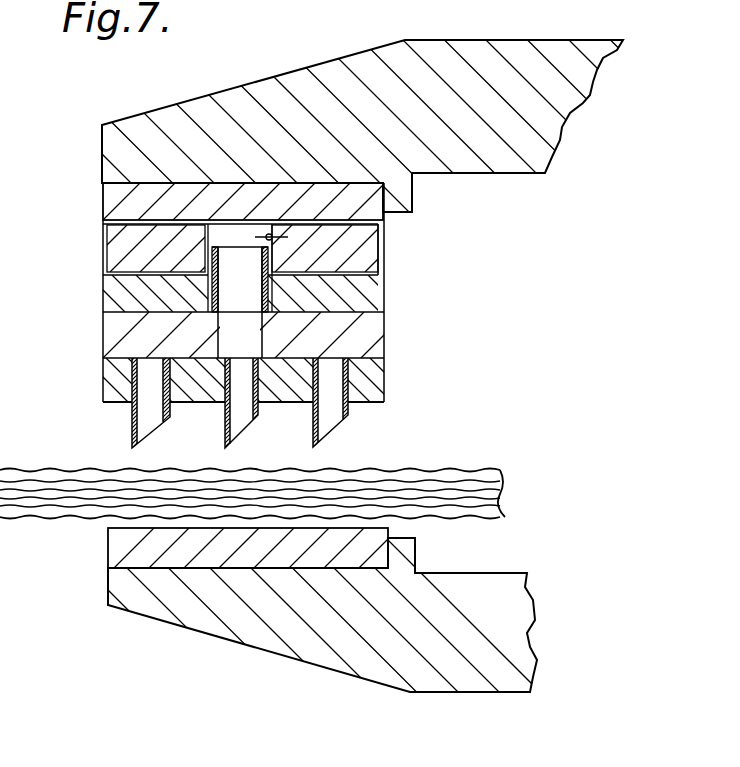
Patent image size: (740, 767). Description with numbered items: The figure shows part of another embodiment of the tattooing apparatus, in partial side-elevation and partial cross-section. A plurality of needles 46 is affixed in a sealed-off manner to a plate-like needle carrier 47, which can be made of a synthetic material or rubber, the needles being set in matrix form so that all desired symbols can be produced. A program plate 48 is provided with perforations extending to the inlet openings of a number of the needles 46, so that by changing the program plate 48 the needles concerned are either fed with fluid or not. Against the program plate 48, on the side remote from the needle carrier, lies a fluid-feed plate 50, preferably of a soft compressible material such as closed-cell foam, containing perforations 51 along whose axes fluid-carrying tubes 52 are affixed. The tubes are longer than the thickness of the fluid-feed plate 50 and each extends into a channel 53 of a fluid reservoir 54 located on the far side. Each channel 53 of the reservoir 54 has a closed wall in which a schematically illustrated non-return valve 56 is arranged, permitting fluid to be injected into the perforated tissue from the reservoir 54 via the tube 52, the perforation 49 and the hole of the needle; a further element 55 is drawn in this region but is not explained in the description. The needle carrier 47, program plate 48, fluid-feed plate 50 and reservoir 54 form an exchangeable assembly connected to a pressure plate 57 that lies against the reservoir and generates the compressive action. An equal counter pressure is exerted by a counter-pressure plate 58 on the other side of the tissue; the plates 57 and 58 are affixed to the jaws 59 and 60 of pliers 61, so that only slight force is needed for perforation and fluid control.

The needles 46 is at (167, 417).
The needle carrier 47 is at (381, 382).
The program plate 48 is at (385, 338).
The perforation 49 is at (228, 335).
The fluid-feed plate 50 is at (373, 302).
The perforations 51 is at (125, 300).
The fluid-carrying tubes 52 is at (112, 288).
The channel 53 is at (210, 236).
The fluid reservoir 54 is at (112, 253).
The wire 55 is at (266, 236).
The non-return valve 56 is at (272, 237).
The pressure plate 57 is at (377, 203).
The counter-pressure plate 58 is at (108, 553).
The jaw 59 is at (497, 162).
The jaw 60 is at (418, 582).
The pliers 61 is at (475, 692).